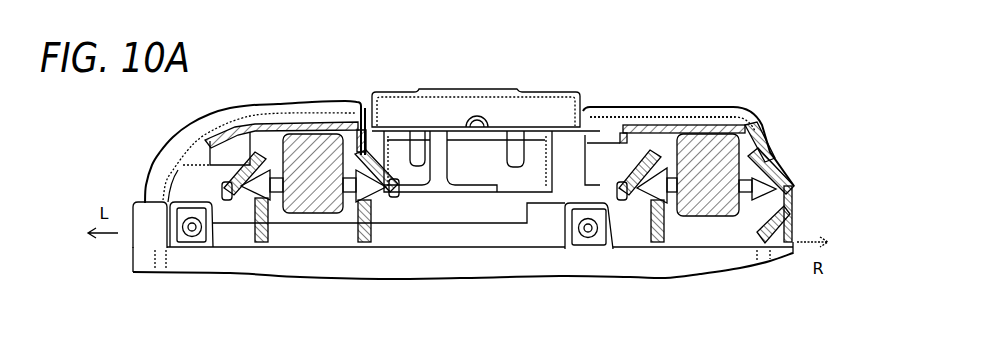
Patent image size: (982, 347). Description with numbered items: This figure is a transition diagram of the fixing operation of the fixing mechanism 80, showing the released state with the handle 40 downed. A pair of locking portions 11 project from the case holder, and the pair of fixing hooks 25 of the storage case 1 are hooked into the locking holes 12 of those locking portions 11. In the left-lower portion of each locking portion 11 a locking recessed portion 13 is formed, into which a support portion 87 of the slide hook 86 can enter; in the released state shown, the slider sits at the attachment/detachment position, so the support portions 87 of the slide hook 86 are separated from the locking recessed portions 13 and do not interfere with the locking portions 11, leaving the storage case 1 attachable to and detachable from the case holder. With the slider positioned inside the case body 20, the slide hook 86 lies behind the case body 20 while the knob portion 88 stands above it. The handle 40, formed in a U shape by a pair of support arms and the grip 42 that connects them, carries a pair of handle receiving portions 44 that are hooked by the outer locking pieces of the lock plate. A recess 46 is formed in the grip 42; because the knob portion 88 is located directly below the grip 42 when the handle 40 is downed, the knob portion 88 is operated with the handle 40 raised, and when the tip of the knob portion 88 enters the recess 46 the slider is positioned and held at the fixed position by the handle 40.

The storage case 1 is at (764, 104).
The locking portion 11 is at (396, 205).
The locking hole 12 is at (297, 205).
The locking recessed portion 13 is at (245, 218).
The case body 20 is at (527, 192).
The fixing hook 25 is at (311, 125).
The handle 40 is at (590, 94).
The grip 42 is at (514, 96).
The handle receiving portion 44 is at (358, 122).
The recess 46 is at (474, 112).
The fixing mechanism 80 is at (531, 256).
The slide hook 86 is at (473, 243).
The support portion 87 is at (216, 240).
The knob portion 88 is at (438, 130).